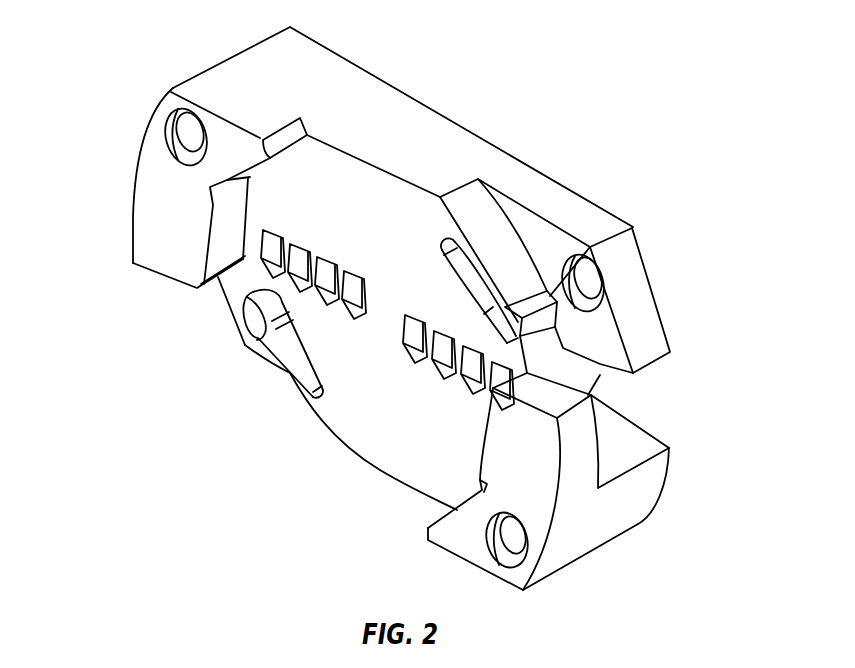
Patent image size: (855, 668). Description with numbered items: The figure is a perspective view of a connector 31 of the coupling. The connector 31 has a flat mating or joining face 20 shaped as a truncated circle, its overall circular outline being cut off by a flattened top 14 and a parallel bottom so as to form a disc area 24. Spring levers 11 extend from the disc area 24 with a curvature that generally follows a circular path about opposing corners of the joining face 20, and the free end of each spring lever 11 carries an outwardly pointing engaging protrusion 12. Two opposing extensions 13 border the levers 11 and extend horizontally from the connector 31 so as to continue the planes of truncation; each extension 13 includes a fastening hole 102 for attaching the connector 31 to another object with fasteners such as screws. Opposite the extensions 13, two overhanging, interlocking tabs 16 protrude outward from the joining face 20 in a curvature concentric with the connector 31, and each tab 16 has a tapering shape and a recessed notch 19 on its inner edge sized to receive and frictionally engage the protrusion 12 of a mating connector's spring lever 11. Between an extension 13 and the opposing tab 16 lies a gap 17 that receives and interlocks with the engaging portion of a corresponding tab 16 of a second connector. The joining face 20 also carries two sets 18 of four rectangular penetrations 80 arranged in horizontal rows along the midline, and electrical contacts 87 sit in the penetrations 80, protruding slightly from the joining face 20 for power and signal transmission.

The spring lever 11 is at (505, 237).
The protrusion 12 is at (590, 240).
The extension 13 is at (232, 311).
The top edge 14 is at (250, 68).
The overhanging interlocking tab 16 is at (148, 212).
The gap 17 is at (605, 378).
The set of penetrations 18 is at (453, 380).
The notch 19 is at (247, 178).
The joining face 20 is at (383, 178).
The disc area 24 is at (405, 195).
The connector 31 is at (663, 163).
The penetration 80 is at (308, 312).
The contact 87 is at (323, 262).
The fastening hole 102 is at (172, 118).